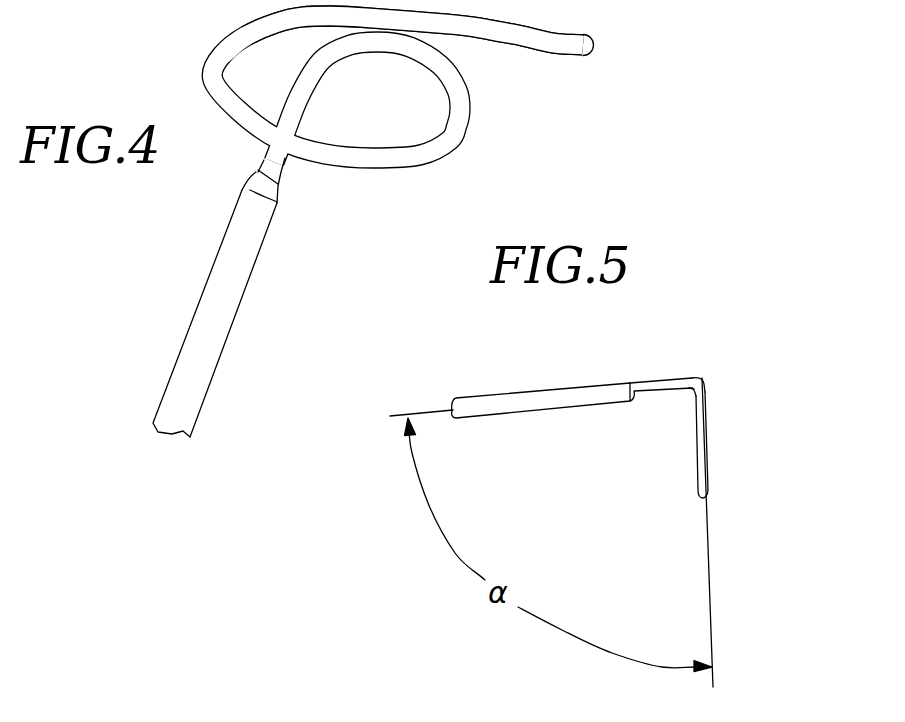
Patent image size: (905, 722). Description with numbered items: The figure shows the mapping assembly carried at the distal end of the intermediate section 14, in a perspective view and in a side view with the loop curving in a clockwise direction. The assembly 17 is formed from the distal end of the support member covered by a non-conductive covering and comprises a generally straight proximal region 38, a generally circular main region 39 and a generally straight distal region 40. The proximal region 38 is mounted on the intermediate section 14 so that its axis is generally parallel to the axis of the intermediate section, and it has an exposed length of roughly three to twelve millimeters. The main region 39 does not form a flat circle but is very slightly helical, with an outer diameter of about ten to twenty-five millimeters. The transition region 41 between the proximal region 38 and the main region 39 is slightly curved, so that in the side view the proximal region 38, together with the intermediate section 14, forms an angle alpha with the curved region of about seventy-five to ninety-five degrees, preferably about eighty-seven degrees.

In FIG. 4, the intermediate section 14 is at (227, 307).
In FIG. 5, the intermediate section 14 is at (547, 392).
In FIG. 4, the loop 17 is at (406, 107).
In FIG. 4, the generally straight proximal region 38 is at (263, 163).
In FIG. 5, the generally straight proximal region 38 is at (650, 380).
In FIG. 4, the generally circular main region 39 is at (406, 61).
In FIG. 5, the generally circular main region 39 is at (708, 463).
In FIG. 4, the generally straight distal region 40 is at (551, 44).
In FIG. 5, the generally straight distal region 40 is at (690, 376).
In FIG. 5, the transition region 41 is at (687, 390).